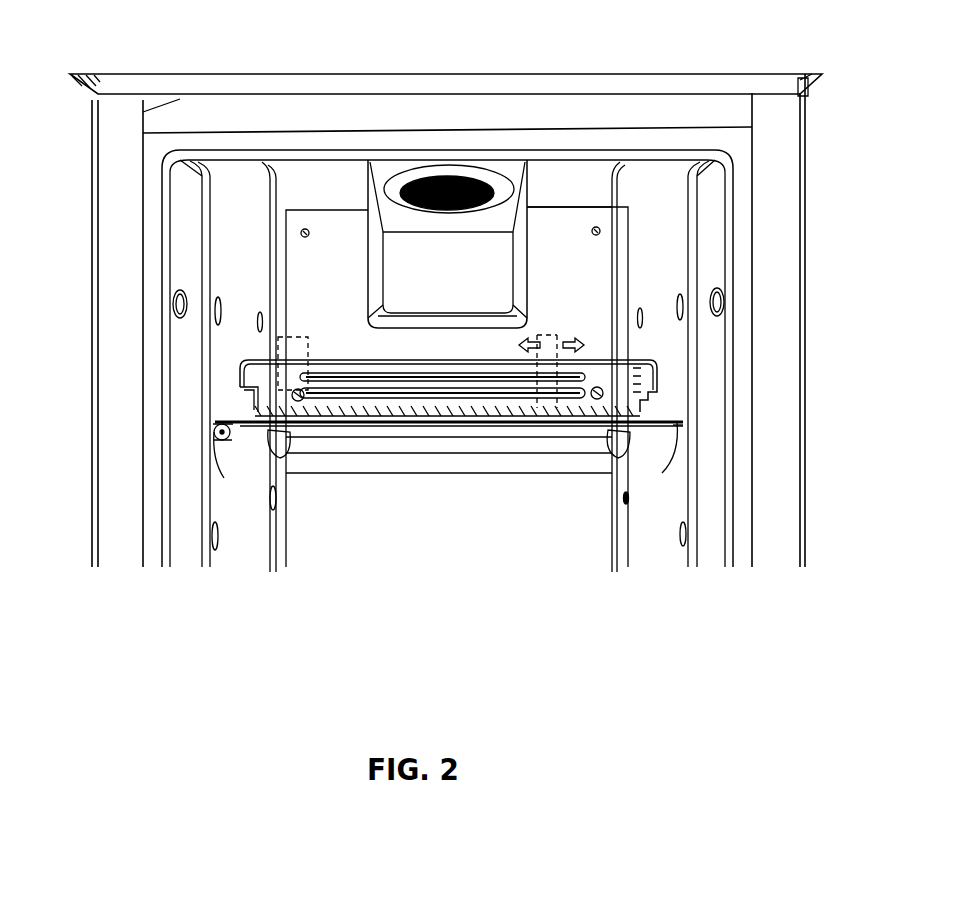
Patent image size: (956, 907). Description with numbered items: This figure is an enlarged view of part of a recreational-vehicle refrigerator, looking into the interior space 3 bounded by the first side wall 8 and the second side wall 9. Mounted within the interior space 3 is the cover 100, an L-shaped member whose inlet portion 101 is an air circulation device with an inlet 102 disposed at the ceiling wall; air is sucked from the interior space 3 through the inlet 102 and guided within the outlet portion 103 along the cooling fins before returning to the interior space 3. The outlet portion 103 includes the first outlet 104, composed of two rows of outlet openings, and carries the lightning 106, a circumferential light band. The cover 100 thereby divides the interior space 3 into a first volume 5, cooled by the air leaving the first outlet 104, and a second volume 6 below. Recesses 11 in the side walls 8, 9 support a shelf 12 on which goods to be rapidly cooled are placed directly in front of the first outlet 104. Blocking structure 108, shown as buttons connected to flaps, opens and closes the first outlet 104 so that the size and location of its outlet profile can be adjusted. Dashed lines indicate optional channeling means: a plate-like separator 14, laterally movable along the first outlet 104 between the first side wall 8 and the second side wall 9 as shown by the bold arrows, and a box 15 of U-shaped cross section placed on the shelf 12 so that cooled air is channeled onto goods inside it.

The interior space 3 is at (372, 518).
The first volume 5 is at (317, 218).
The second volume 6 is at (476, 520).
The first side wall 8 is at (712, 527).
The second side wall 9 is at (180, 512).
The recesses 11 is at (214, 460).
The shelf 12 is at (556, 426).
The separator 14 is at (547, 330).
The box 15 is at (302, 337).
The cover 100 is at (500, 179).
The inlet portion 101 is at (480, 240).
The inlet 102 is at (447, 180).
The outlet portion 103 is at (580, 215).
The first outlet 104 is at (462, 374).
The lightning 106 is at (372, 242).
The blocking structure 108 is at (292, 391).